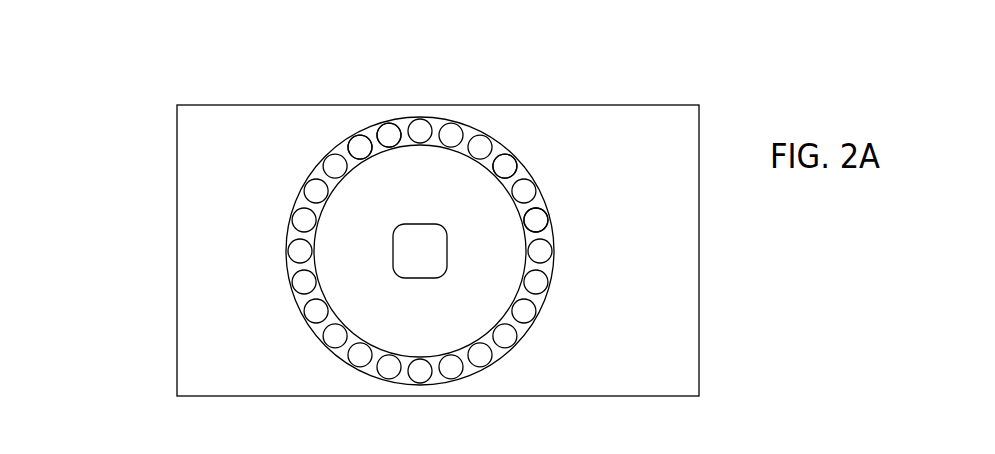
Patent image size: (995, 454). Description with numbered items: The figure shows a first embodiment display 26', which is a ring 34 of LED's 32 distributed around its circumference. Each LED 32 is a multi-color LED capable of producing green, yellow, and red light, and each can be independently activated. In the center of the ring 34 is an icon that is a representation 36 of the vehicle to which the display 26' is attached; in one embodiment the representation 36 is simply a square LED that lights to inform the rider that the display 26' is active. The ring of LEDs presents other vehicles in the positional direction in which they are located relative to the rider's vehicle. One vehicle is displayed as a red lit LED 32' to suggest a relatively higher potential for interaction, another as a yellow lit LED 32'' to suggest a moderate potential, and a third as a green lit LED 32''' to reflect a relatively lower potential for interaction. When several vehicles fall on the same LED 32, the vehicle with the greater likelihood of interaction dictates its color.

The display 26' is at (376, 250).
The LED 32 is at (550, 119).
The red lit LED 32' is at (398, 87).
The yellow lit LED 32'' is at (607, 146).
The green lit LED 32''' is at (327, 93).
The ring 34 is at (553, 235).
The representation 36 is at (420, 225).